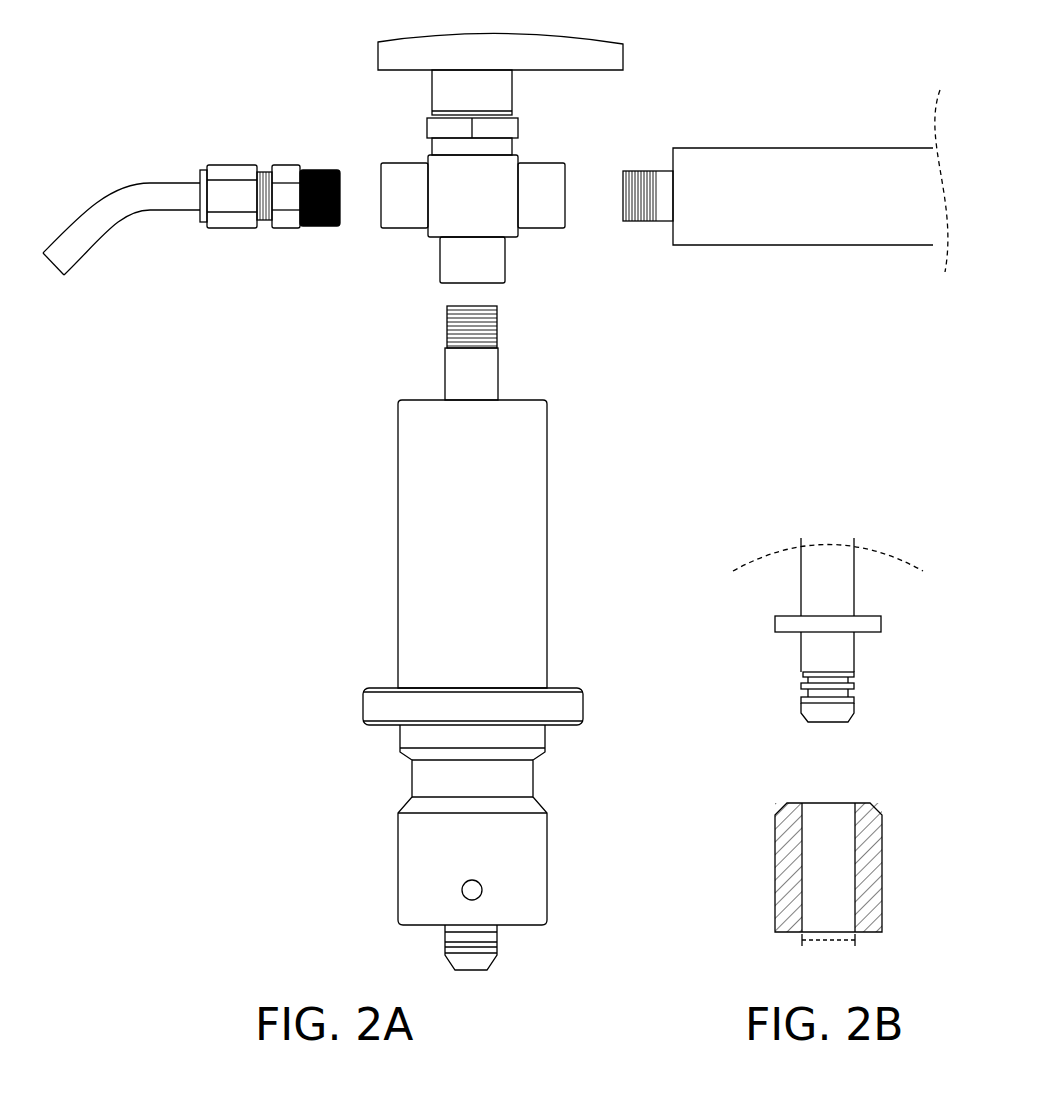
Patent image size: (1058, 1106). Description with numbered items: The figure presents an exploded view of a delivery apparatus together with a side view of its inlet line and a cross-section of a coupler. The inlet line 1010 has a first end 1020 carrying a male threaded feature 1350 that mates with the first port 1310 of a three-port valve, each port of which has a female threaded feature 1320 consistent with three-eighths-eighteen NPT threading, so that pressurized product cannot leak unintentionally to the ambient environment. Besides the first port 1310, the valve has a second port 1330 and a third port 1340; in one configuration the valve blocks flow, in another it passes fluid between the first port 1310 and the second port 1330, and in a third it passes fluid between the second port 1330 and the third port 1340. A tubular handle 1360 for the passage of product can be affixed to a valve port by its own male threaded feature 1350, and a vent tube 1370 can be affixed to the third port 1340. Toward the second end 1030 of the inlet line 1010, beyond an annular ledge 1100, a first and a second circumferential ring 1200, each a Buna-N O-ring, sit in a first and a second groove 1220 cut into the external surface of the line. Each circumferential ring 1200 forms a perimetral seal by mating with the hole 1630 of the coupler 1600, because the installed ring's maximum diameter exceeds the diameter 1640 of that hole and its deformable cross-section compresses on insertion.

In FIG. 2A, the inlet line 1010 is at (514, 375).
In FIG. 2B, the inlet line 1010 is at (684, 576).
In FIG. 2A, the first end of the inlet line 1020 is at (418, 340).
In FIG. 2B, the second end of the inlet line 1030 is at (746, 720).
In FIG. 2B, the annular ledge 1100 is at (888, 623).
In FIG. 2B, the circumferential ring 1200 is at (858, 674).
In FIG. 2B, the groove 1220 is at (806, 676).
In FIG. 2A, the first port 1310 is at (503, 264).
In FIG. 2A, the female threaded feature 1320 is at (376, 179).
In FIG. 2A, the second port 1330 is at (557, 168).
In FIG. 2A, the third port 1340 is at (382, 226).
In FIG. 2A, the male threaded feature 1350 is at (316, 234).
In FIG. 2A, the handle 1360 is at (772, 140).
In FIG. 2A, the vent tube 1370 is at (86, 188).
In FIG. 2B, the coupler 1600 is at (740, 830).
In FIG. 2B, the hole of the coupler 1630 is at (816, 810).
In FIG. 2B, the diameter of the hole of the coupler 1640 is at (828, 943).